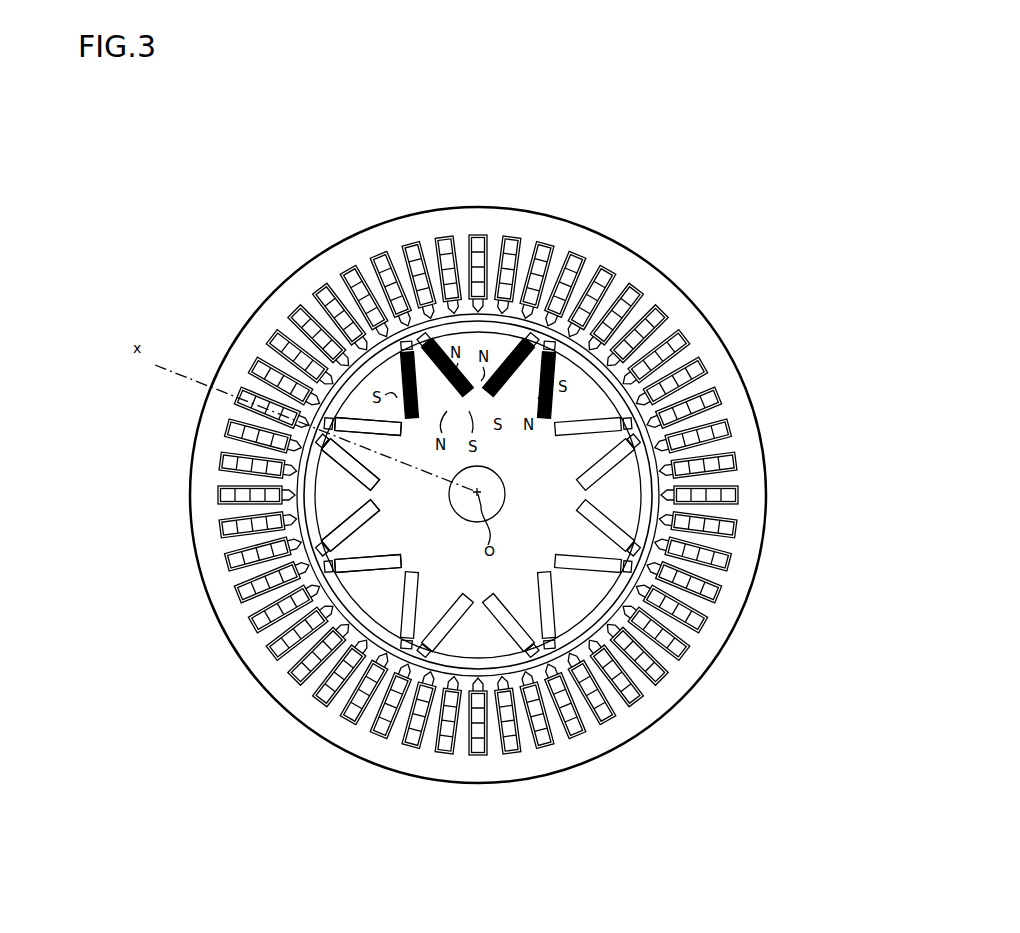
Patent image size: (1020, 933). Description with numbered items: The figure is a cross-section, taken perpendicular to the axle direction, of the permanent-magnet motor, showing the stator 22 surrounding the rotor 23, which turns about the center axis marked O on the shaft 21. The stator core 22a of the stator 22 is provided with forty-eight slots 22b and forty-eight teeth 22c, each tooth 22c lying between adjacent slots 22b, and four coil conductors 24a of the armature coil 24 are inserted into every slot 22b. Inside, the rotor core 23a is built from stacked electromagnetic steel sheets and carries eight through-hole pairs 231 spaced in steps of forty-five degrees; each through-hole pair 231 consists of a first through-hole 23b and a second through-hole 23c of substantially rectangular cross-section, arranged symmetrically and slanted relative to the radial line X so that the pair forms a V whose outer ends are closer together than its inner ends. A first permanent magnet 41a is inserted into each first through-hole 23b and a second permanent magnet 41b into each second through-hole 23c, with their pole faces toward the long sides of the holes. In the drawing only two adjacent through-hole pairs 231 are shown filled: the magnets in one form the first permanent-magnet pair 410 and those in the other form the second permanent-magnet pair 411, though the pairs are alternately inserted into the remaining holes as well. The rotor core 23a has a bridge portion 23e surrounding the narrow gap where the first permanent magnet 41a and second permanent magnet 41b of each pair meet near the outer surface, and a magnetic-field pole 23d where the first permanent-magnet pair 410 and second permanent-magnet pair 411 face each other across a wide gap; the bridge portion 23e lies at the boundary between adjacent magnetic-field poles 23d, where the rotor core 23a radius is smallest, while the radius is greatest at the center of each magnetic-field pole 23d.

The shaft 21 is at (452, 508).
The stator 22 is at (540, 210).
The stator core 22a is at (610, 248).
The slot 22b is at (667, 312).
The teeth 22c is at (735, 457).
The rotor 23 is at (315, 505).
The rotor core 23a is at (333, 580).
The first through-hole 23b is at (350, 470).
The second through-hole 23c is at (335, 422).
The magnetic-field pole 23d is at (633, 507).
The bridge portion 23e is at (630, 420).
The through-hole pair 231 is at (137, 288).
The armature coil 24 is at (703, 360).
The coil conductor 24a is at (693, 407).
The first permanent magnet 41a is at (518, 340).
The second permanent magnet 41b is at (555, 340).
The first permanent-magnet pair 410 is at (255, 213).
The second permanent-magnet pair 411 is at (523, 143).